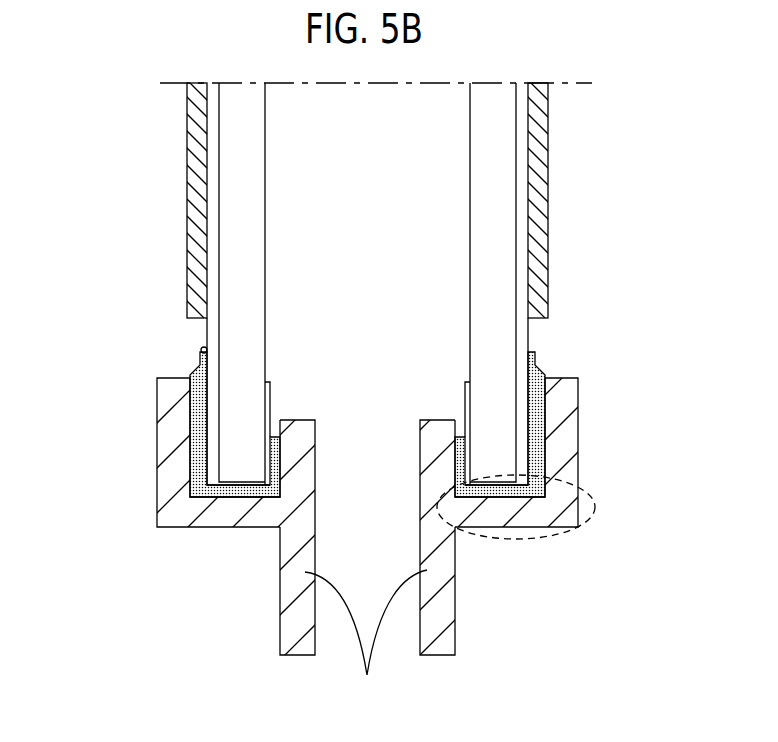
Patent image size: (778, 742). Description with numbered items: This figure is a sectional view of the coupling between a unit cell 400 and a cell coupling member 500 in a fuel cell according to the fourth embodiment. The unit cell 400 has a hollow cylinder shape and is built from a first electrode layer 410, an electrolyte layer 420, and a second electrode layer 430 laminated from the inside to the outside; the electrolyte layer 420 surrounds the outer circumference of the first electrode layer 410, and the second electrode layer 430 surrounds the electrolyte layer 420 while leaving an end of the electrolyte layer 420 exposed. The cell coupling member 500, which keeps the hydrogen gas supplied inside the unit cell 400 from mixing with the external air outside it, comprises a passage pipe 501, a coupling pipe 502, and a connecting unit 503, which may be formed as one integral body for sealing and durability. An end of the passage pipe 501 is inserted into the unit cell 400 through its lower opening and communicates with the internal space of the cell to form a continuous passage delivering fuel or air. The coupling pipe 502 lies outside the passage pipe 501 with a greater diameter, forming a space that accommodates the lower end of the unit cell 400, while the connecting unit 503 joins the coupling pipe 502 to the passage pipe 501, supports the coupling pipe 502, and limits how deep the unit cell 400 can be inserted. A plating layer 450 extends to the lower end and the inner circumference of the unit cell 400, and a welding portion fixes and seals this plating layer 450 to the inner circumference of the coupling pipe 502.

The unit cell 400 is at (160, 166).
The first electrode layer 410 is at (229, 193).
The electrolyte layer 420 is at (213, 232).
The second electrode layer 430 is at (197, 303).
The plating layer 450 is at (202, 356).
The cell coupling member 500 is at (259, 556).
The passage pipe 501 is at (366, 644).
The coupling pipe 502 is at (170, 493).
The connecting unit 503 is at (592, 500).